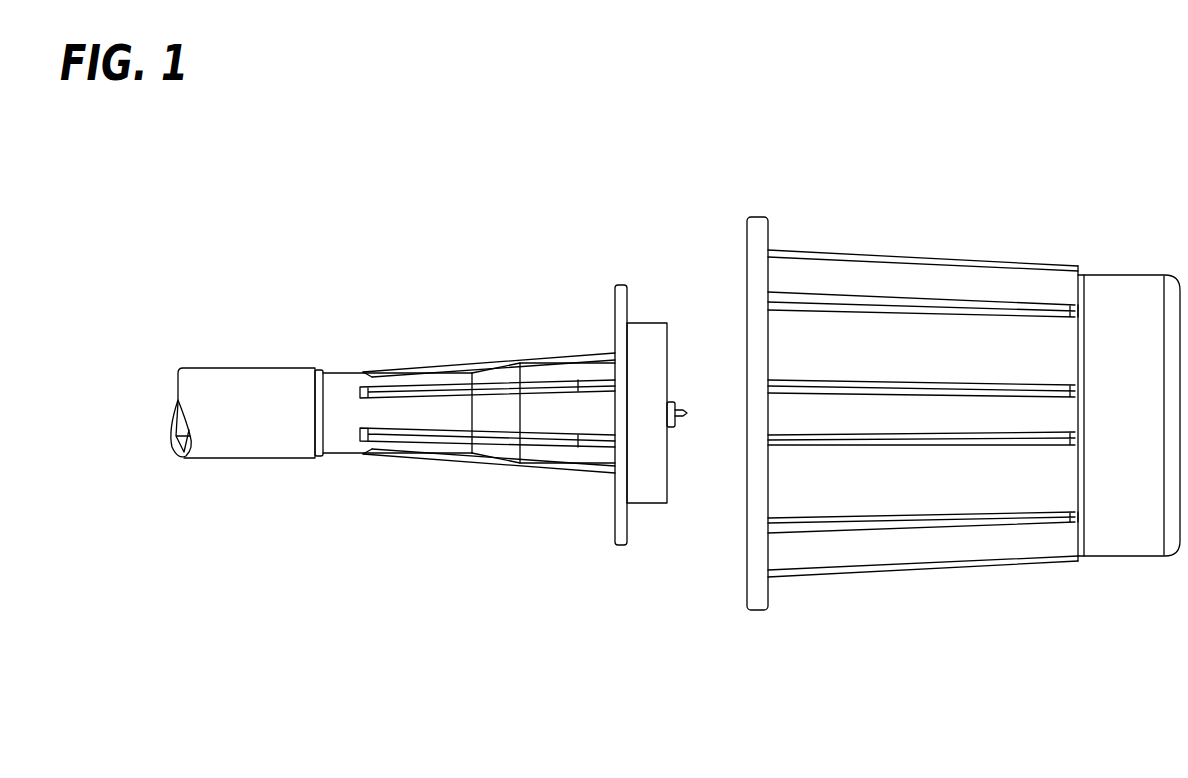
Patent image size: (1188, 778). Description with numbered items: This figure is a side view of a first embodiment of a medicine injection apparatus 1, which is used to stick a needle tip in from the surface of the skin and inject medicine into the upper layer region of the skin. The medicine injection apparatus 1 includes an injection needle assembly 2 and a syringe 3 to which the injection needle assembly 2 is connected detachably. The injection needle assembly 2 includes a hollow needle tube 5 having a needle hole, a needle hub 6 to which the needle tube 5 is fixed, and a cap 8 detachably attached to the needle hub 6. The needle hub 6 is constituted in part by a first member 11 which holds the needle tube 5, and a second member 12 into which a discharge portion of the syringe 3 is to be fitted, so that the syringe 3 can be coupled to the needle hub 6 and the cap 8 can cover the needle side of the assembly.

The medicine injection apparatus 1 is at (1046, 128).
The injection needle assembly 2 is at (661, 632).
The syringe 3 is at (258, 378).
The needle tube 5 is at (682, 418).
The needle hub 6 is at (490, 288).
The cap 8 is at (896, 563).
The first member 11 is at (684, 378).
The second member 12 is at (345, 452).